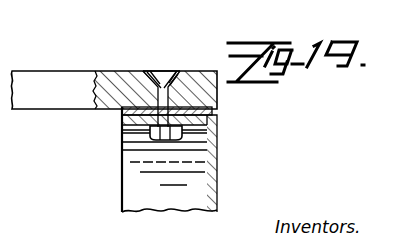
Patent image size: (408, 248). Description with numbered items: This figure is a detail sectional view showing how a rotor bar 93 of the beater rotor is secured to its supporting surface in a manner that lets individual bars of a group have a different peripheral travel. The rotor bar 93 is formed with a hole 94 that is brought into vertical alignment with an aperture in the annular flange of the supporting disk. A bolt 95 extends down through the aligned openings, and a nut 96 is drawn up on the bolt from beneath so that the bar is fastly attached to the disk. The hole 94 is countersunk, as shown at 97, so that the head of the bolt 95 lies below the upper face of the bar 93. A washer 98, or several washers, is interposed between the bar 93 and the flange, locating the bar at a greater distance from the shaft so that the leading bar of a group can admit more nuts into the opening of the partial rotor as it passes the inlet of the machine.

The rotor bar 93 is at (42, 78).
The hole 94 is at (188, 74).
The bolt 95 is at (162, 70).
The nut 96 is at (121, 136).
The countersink 97 is at (145, 70).
The washer 98 is at (215, 110).